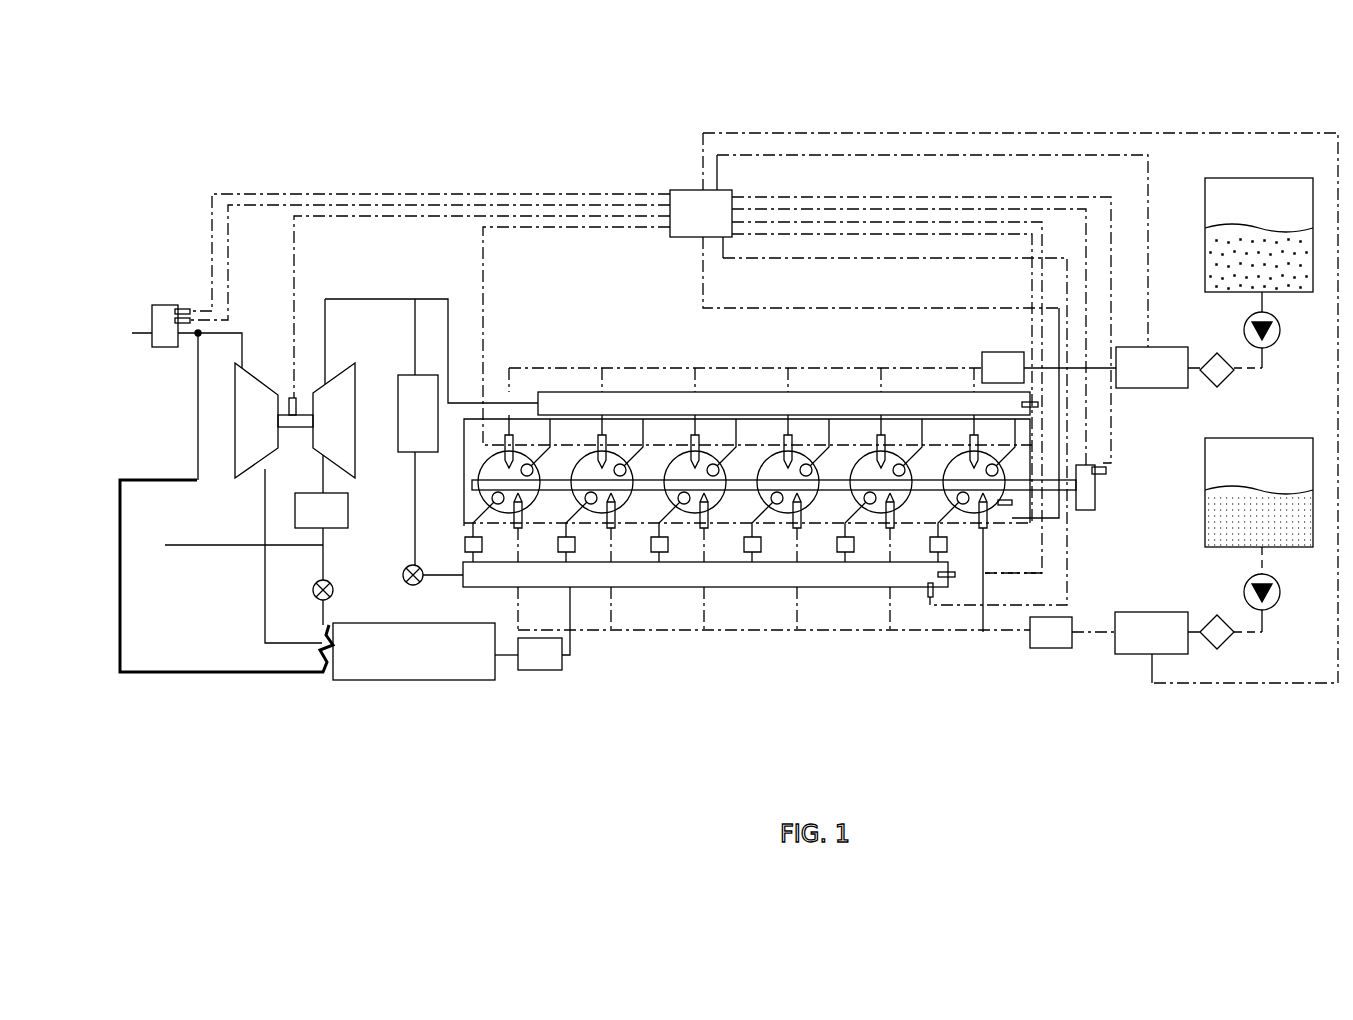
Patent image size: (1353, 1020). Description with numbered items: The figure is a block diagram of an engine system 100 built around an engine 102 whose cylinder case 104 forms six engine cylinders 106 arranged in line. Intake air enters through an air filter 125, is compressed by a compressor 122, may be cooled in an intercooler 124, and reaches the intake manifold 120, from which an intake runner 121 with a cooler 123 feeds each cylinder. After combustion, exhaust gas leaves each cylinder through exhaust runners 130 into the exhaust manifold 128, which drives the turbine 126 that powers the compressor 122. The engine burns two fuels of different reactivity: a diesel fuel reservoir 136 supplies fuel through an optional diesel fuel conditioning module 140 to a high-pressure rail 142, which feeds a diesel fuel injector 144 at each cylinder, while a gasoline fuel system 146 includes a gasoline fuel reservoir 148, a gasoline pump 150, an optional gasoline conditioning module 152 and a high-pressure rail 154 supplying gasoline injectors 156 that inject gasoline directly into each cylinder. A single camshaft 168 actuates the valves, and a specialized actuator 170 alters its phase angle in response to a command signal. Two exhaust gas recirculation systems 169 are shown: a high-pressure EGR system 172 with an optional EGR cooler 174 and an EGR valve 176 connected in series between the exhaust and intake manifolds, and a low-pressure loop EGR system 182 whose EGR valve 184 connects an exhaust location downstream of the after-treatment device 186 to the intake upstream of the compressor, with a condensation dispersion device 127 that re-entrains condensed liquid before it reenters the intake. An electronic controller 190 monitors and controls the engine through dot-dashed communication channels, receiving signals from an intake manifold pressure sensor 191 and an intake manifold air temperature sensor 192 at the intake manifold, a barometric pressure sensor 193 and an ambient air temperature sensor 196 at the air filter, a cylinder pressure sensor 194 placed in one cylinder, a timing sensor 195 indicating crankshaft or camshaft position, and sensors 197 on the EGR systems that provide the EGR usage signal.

The engine system 100 is at (257, 150).
The engine 102 is at (997, 650).
The cylinder case 104 is at (512, 392).
The engine cylinders 106 is at (590, 467).
The intake manifold 120 is at (847, 575).
The intake runner 121 is at (838, 515).
The compressor 122 is at (238, 420).
The cooler 123 is at (730, 560).
The intercooler 124 is at (355, 680).
The air filter 125 is at (160, 350).
The turbine 126 is at (355, 460).
The condensation dispersion device 127 is at (540, 670).
The exhaust manifold 128 is at (637, 405).
The exhaust runners 130 is at (736, 428).
The diesel fuel reservoir 136 is at (1259, 492).
The diesel fuel conditioning module 140 is at (1145, 612).
The high-pressure rail 142 is at (1055, 648).
The diesel fuel injector 144 is at (985, 530).
The gasoline fuel system 146 is at (1222, 113).
The gasoline fuel reservoir 148 is at (1259, 235).
The gasoline pump 150 is at (1280, 330).
The gasoline conditioning module 152 is at (1152, 388).
The high-pressure rail 154 is at (990, 352).
The gasoline injectors 156 is at (898, 440).
The camshaft 168 is at (648, 483).
The exhaust gas recirculation system 169 is at (216, 394).
The actuator 170 is at (1095, 500).
The high-pressure EGR system 172 is at (383, 290).
The EGR cooler 174 is at (398, 395).
The EGR valve 176 is at (403, 575).
The low-pressure loop EGR system 182 is at (280, 660).
The EGR valve 184 is at (313, 590).
The after-treatment device 186 is at (295, 510).
The electronic controller 190 is at (688, 190).
The intake manifold pressure sensor 191 is at (952, 577).
The intake manifold air temperature sensor 192 is at (928, 597).
The barometric pressure sensor 193 is at (188, 325).
The cylinder pressure sensor 194 is at (1010, 506).
The timing sensor 195 is at (1106, 472).
The ambient air temperature sensor 196 is at (188, 305).
The sensors 197 is at (290, 395).